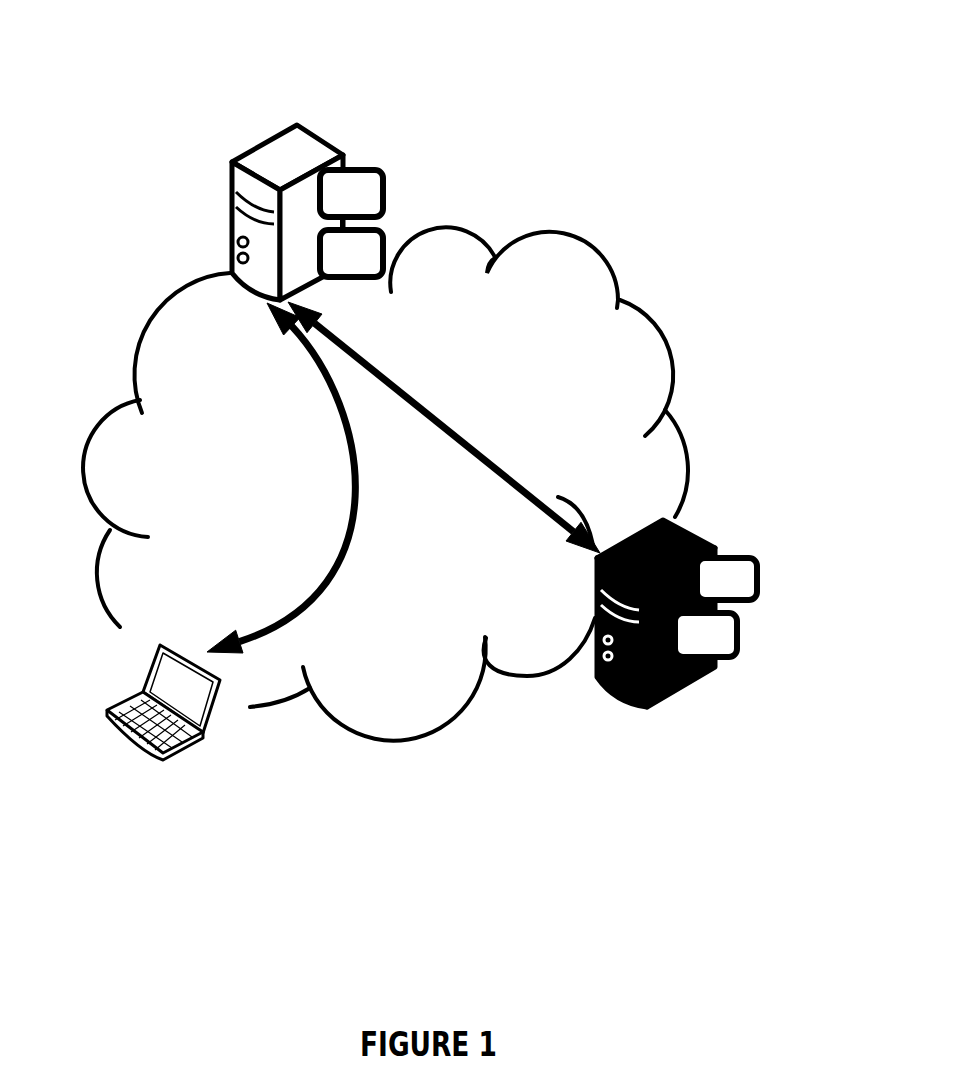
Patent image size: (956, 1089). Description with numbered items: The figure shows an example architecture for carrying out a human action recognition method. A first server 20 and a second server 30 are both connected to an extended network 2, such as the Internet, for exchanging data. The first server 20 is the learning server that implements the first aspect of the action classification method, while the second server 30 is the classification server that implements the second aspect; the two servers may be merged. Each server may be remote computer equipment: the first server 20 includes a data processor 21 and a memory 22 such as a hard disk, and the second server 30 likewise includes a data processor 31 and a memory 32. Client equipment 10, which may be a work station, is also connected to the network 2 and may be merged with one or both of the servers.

The extended network 2 is at (676, 329).
The client equipment 10 is at (99, 702).
The first server 20 is at (302, 110).
The data processor 21 is at (398, 269).
The memory 22 is at (402, 179).
The second server 30 is at (697, 694).
The data processor 31 is at (758, 621).
The memory 32 is at (767, 557).